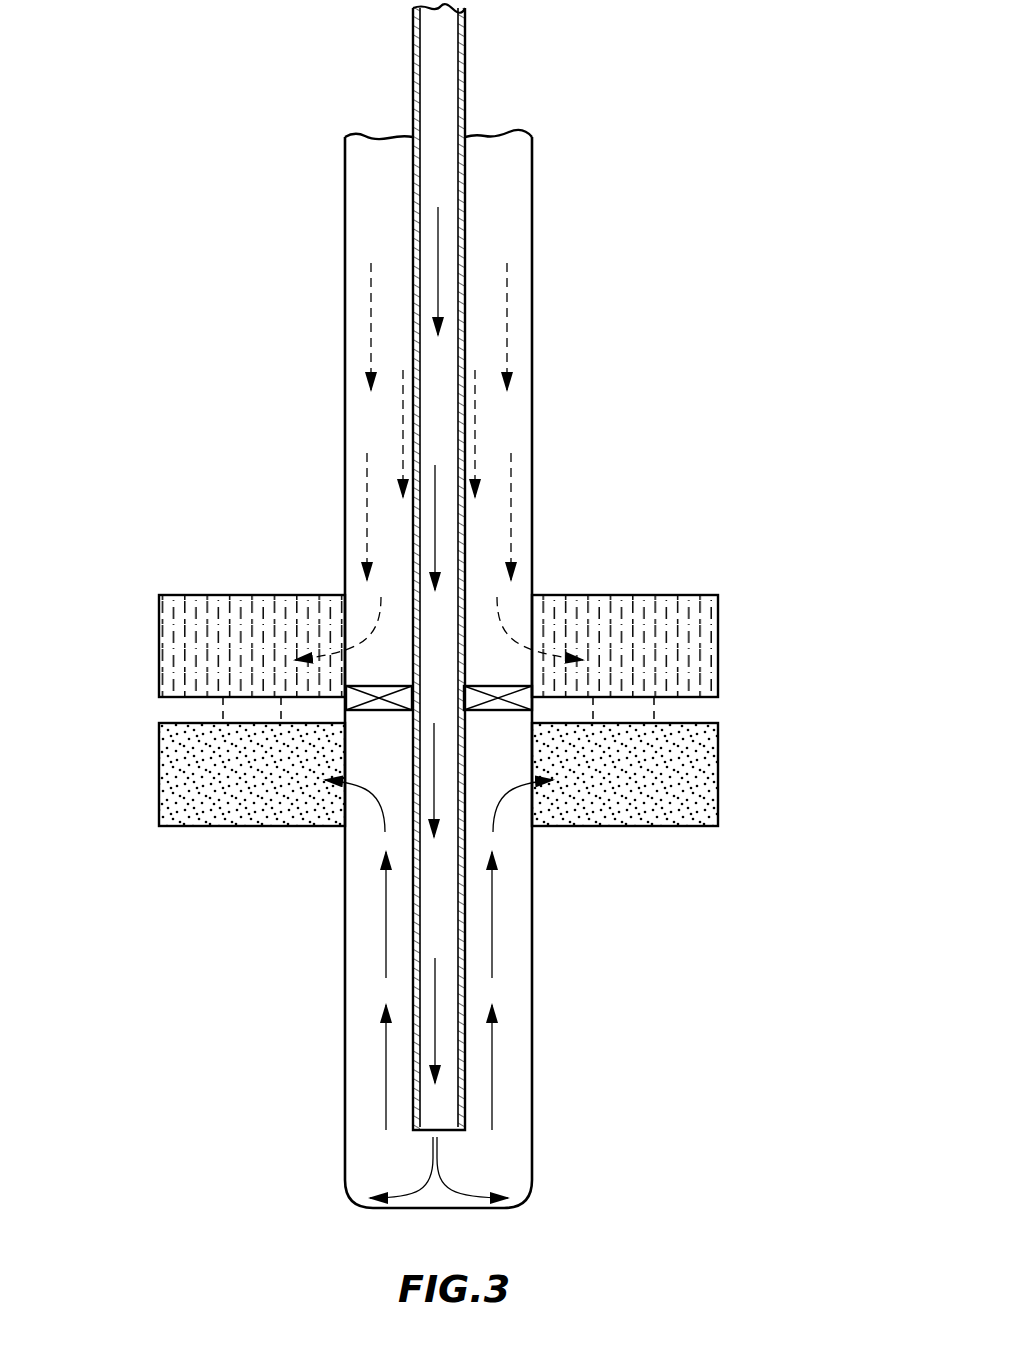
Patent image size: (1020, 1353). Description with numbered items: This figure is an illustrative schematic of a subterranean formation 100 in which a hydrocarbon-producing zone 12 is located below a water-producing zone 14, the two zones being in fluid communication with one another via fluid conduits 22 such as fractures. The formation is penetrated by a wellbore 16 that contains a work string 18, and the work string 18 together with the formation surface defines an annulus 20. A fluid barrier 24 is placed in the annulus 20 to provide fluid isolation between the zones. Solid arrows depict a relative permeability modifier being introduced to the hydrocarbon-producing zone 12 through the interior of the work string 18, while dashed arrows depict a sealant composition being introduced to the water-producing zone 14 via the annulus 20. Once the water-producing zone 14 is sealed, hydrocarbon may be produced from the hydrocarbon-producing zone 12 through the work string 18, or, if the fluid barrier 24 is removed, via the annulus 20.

The subterranean formation 100 is at (139, 198).
The hydrocarbon-producing zone 12 is at (708, 755).
The water-producing zone 14 is at (690, 628).
The wellbore 16 is at (533, 280).
The work string 18 is at (430, 47).
The annulus 20 is at (494, 150).
The fluid conduits 22 is at (657, 722).
The fluid barrier 24 is at (362, 710).